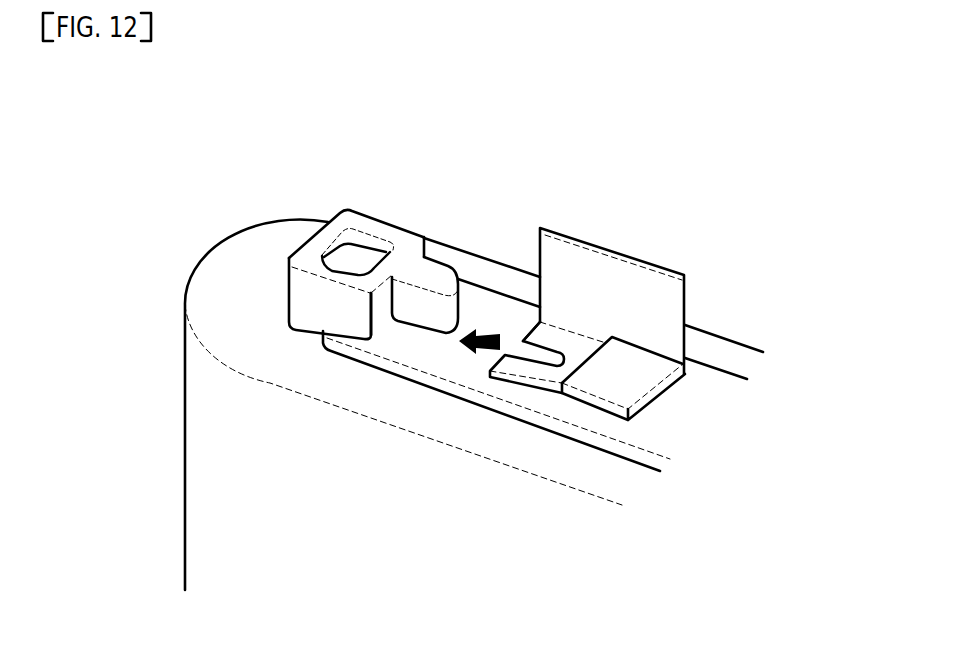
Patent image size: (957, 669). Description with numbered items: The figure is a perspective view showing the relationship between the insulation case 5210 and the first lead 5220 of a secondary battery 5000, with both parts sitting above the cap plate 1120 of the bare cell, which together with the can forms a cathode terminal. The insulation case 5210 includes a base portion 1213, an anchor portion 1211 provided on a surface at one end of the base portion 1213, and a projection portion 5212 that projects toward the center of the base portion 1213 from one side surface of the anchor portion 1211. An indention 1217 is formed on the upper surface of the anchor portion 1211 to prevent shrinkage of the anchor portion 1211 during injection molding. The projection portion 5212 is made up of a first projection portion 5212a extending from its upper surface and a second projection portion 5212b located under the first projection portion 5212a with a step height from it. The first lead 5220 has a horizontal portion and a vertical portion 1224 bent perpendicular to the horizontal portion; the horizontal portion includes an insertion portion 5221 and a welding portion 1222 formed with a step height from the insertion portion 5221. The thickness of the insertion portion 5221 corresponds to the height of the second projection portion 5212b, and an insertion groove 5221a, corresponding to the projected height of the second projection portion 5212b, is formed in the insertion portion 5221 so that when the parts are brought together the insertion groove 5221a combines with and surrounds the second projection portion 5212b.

The secondary battery 5000 is at (793, 168).
The cap plate 1120 is at (223, 293).
The anchor portion 1211 is at (318, 232).
The base portion 1213 is at (587, 433).
The indention 1217 is at (358, 236).
The welding portion 1222 is at (628, 378).
The vertical portion 1224 is at (598, 282).
The insulation case 5210 is at (291, 345).
The projection portion 5212 is at (340, 345).
The first projection portion 5212a is at (403, 302).
The second projection portion 5212b is at (413, 330).
The first lead 5220 is at (608, 364).
The insertion portion 5221 is at (488, 364).
The insertion groove 5221a is at (523, 341).